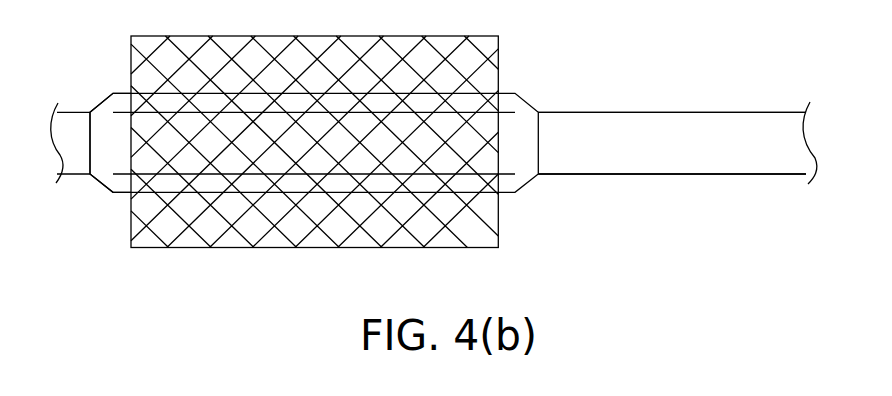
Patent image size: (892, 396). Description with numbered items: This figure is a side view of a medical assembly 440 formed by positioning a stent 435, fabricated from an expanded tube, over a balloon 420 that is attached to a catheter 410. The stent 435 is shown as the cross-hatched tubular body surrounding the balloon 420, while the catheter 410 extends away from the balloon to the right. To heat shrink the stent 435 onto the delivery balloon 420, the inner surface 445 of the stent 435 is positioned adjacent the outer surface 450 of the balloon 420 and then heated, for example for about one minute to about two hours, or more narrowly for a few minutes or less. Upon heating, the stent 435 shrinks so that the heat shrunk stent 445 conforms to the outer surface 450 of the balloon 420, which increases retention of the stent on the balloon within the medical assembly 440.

The catheter 410 is at (652, 112).
The balloon 420 is at (513, 91).
The stent 435 is at (178, 217).
The medical assembly 440 is at (713, 210).
The inner surface 445 is at (232, 238).
The outer surface 450 is at (115, 82).